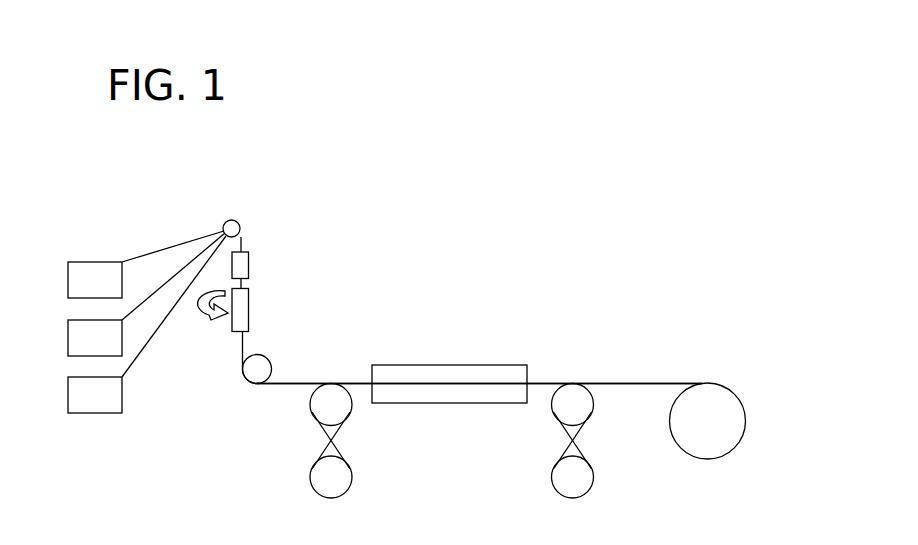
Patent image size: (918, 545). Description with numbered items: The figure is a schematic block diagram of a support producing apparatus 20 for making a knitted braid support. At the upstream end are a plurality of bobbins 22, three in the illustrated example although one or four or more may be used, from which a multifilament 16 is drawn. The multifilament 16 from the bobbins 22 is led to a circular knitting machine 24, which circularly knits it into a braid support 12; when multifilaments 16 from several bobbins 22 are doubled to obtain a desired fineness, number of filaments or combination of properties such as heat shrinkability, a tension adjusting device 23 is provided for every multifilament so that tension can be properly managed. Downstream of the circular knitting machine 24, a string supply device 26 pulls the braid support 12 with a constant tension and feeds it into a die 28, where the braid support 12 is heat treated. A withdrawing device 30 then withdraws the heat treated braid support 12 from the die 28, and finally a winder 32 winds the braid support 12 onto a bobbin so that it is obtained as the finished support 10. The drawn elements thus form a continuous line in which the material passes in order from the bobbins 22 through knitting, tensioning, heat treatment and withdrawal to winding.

The support 10 is at (479, 351).
The braid support 12 is at (277, 387).
The multifilament 16 is at (167, 242).
The support producing apparatus 20 is at (417, 160).
The bobbins 22 is at (97, 262).
The tension adjusting device 23 is at (250, 263).
The circular knitting machine 24 is at (250, 308).
The string supply device 26 is at (310, 480).
The die 28 is at (453, 364).
The withdrawing device 30 is at (550, 480).
The winder 32 is at (705, 382).